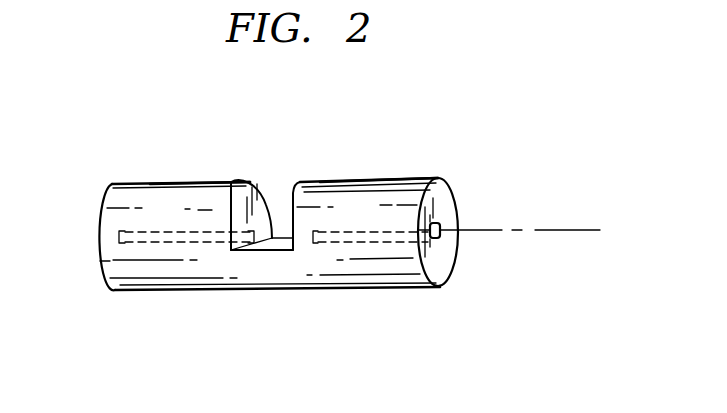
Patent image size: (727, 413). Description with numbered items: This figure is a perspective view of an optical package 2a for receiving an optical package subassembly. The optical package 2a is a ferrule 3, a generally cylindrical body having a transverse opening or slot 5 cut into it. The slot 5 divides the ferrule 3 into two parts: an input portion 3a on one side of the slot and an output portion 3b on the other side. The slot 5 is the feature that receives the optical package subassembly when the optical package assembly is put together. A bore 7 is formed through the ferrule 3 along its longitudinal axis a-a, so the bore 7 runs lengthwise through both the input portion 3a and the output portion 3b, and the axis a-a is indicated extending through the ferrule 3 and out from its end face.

The optical package 2a is at (100, 167).
The ferrule 3 is at (260, 288).
The input portion 3a is at (178, 187).
The output portion 3b is at (372, 195).
The slot 5 is at (278, 196).
The bore 7 is at (119, 237).
The longitudinal axis a-a is at (565, 230).